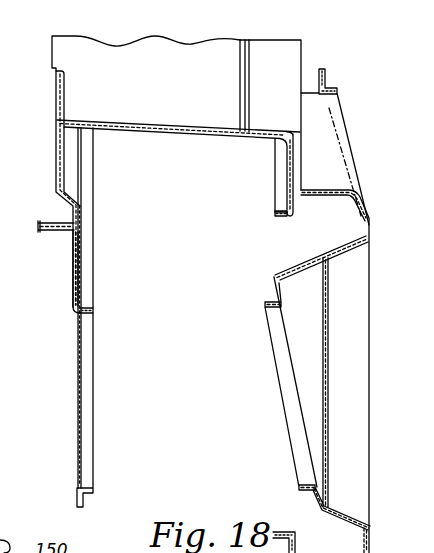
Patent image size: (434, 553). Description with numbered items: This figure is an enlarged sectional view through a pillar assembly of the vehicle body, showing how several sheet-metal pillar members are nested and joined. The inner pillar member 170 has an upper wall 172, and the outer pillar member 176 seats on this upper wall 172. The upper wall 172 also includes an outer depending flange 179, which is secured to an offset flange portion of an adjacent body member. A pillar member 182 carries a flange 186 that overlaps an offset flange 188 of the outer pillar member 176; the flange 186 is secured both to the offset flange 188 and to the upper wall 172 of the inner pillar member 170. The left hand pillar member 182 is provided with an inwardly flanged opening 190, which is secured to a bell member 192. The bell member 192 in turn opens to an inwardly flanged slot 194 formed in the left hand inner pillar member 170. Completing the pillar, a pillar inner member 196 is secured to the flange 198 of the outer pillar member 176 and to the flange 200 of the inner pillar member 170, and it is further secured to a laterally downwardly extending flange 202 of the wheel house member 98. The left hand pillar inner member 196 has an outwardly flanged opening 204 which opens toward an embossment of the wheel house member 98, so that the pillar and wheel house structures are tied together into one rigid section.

The outer pillar member 176 is at (172, 50).
The flange 186 is at (277, 56).
The flange 198 is at (65, 88).
The flange 200 is at (67, 161).
The inner pillar member 170 is at (163, 131).
The upper wall 172 is at (202, 133).
The offset flange 188 is at (259, 131).
The pillar member 182 is at (345, 151).
The outer depending flange 179 is at (285, 186).
The inwardly flanged slot 194 is at (277, 218).
The wheel house member 98 is at (45, 222).
The pillar inner member 196 is at (80, 211).
The laterally downwardly extending flange 202 is at (74, 262).
The outwardly flanged opening 204 is at (91, 315).
The bell member 192 is at (323, 257).
The inwardly flanged opening 190 is at (352, 277).